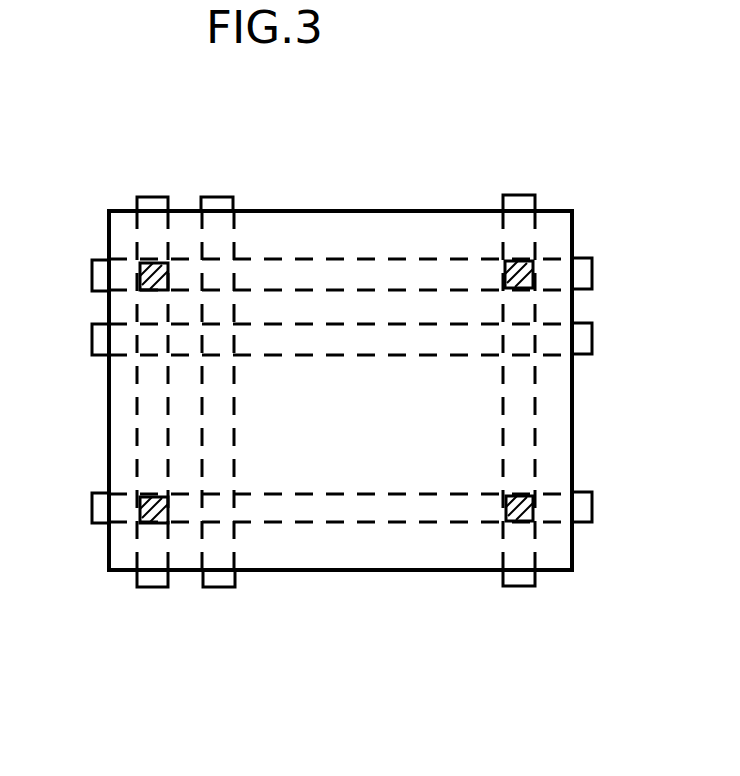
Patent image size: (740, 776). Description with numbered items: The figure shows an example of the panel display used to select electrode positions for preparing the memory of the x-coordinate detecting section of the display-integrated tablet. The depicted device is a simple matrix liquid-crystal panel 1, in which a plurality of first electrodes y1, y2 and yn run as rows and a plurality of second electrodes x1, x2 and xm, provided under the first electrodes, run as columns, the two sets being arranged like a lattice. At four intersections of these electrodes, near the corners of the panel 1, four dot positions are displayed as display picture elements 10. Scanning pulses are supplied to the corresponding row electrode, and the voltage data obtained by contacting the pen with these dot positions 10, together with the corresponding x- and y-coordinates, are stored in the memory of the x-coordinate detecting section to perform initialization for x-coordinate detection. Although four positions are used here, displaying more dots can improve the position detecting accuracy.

The simple matrix liquid-crystal panel 1 is at (108, 226).
The display picture element 10 is at (166, 265).
The second electrode x1 is at (153, 411).
The second electrode x2 is at (218, 411).
The second electrode xm is at (522, 409).
The first electrode y1 is at (322, 276).
The first electrode y2 is at (322, 340).
The first electrode yn is at (322, 509).